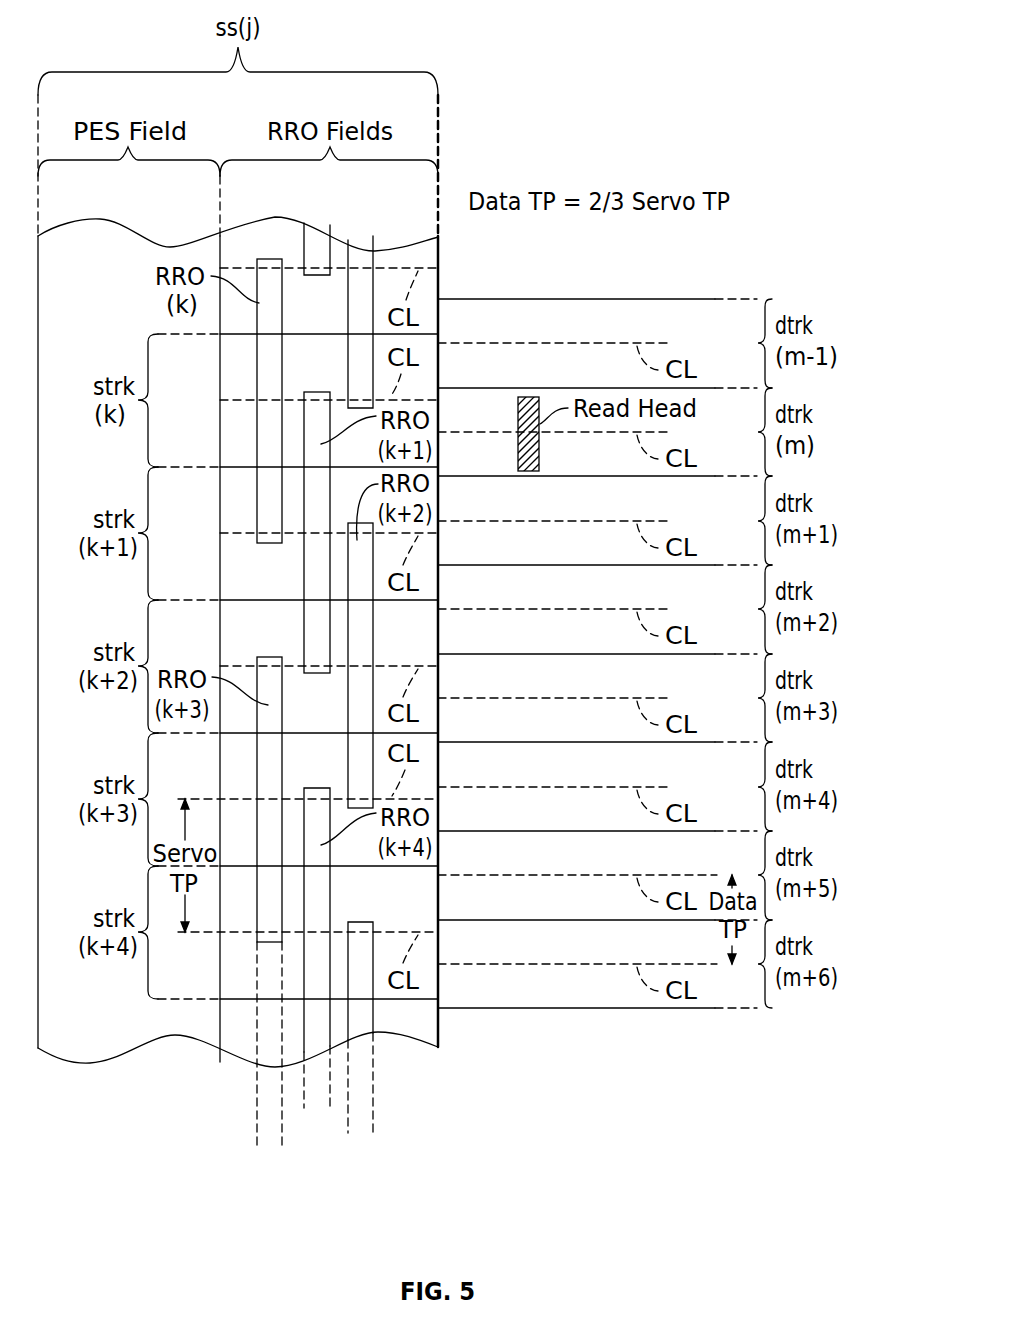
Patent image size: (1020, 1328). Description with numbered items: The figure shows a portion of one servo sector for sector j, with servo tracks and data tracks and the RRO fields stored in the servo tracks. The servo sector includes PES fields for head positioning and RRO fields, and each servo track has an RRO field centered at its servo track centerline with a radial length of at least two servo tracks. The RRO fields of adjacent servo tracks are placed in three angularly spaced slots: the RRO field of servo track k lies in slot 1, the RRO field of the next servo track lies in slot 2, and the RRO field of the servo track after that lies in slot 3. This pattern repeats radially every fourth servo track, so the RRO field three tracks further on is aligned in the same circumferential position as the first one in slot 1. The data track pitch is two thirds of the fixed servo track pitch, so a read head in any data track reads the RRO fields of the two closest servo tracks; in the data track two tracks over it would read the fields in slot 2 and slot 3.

The slot1 1 is at (257, 1150).
The slot2 2 is at (304, 1108).
The slot3 3 is at (348, 1133).